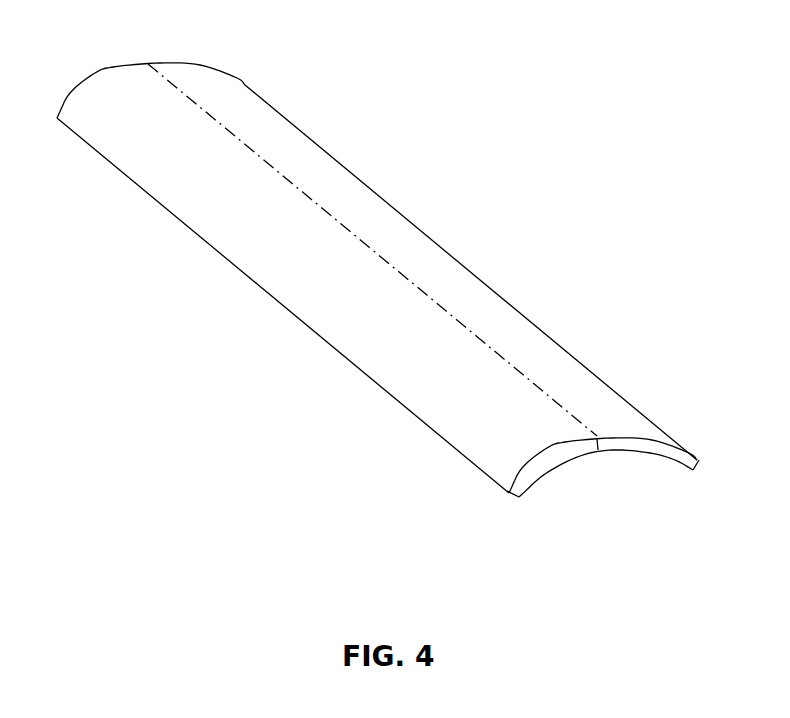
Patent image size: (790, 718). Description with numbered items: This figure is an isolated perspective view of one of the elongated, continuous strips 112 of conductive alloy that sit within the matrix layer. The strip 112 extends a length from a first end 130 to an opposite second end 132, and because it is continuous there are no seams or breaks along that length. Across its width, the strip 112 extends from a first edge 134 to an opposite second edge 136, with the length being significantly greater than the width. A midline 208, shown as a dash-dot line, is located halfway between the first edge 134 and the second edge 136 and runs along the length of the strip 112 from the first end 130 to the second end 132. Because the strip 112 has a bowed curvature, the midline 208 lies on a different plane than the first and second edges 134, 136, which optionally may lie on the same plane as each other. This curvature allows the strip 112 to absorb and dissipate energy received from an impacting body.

The strip 112 is at (459, 126).
The first end 130 is at (112, 72).
The second end 132 is at (545, 462).
The first edge 134 is at (520, 498).
The second edge 136 is at (698, 466).
The midline 208 is at (424, 289).